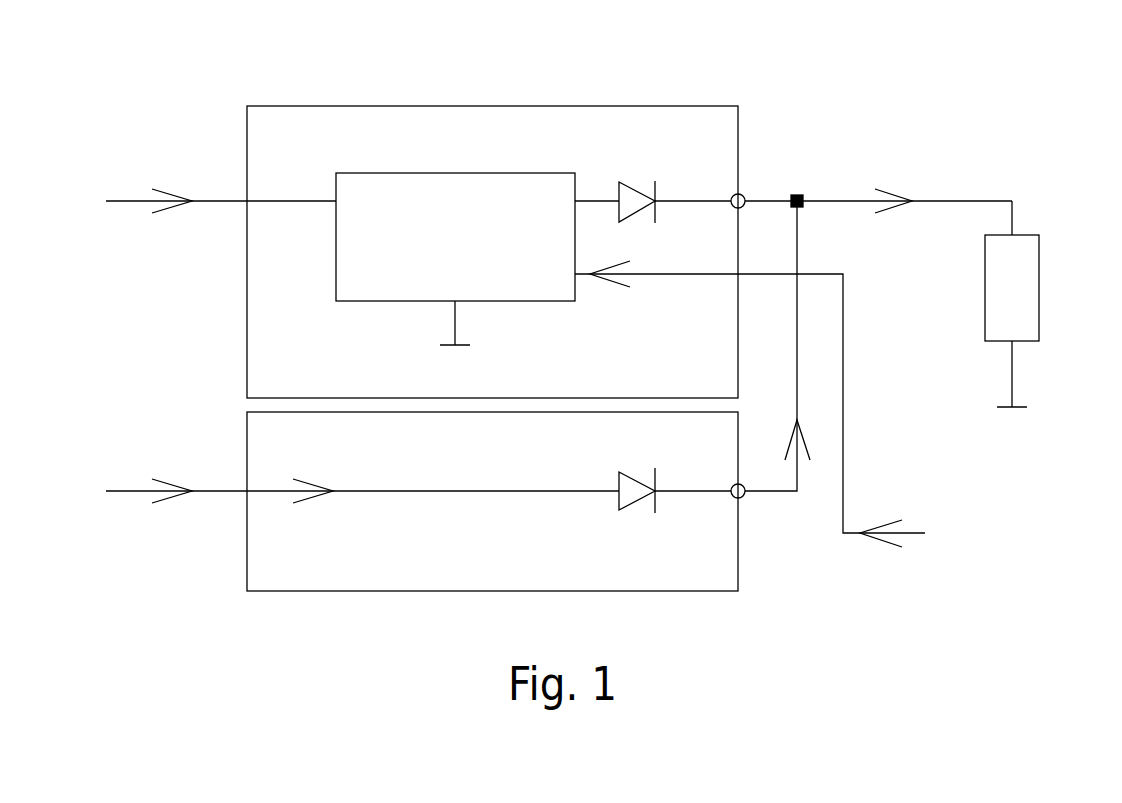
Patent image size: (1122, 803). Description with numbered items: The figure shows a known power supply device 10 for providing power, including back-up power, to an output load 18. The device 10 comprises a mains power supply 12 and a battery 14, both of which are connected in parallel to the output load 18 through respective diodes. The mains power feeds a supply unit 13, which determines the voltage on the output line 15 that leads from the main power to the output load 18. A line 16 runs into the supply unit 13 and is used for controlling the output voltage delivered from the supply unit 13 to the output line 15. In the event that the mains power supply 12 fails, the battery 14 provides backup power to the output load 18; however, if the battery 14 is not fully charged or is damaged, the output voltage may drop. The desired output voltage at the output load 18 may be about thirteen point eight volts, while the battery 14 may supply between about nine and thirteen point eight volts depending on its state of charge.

The power supply device 10 is at (838, 78).
The mains power supply 12 is at (122, 200).
The supply unit 13 is at (456, 188).
The battery 14 is at (123, 490).
The output line 15 is at (683, 200).
The line 16 is at (912, 531).
The output load 18 is at (1027, 301).